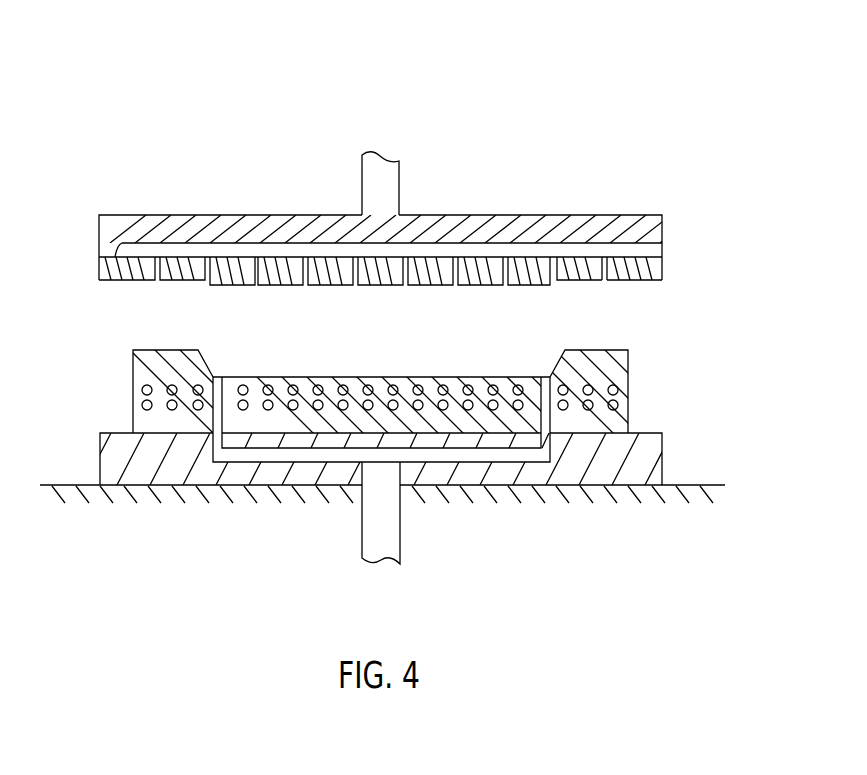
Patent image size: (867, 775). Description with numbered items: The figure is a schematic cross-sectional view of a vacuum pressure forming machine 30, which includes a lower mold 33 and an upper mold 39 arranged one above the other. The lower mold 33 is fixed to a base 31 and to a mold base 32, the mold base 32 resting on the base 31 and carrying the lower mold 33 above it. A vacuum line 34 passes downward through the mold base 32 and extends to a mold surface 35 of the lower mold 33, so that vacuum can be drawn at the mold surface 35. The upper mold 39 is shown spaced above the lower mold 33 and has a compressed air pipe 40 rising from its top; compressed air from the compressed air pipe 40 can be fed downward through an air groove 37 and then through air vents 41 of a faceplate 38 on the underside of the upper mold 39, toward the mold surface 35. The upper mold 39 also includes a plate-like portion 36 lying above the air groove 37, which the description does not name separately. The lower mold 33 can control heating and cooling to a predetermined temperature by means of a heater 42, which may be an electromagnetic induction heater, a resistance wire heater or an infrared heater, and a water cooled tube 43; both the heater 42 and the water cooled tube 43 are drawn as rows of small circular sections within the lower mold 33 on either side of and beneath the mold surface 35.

The vacuum pressure forming machine 30 is at (290, 138).
The base 31 is at (703, 500).
The mold base 32 is at (645, 462).
The lower mold 33 is at (605, 421).
The vacuum line 34 is at (387, 548).
The mold surface 35 is at (377, 378).
The upper plate 36 is at (640, 230).
The air groove 37 is at (635, 250).
The faceplate 38 is at (652, 272).
The upper mold 39 is at (728, 205).
The compressed air pipe 40 is at (387, 185).
The air vents 41 is at (603, 284).
The heater 42 is at (141, 389).
The water cooled tube 43 is at (141, 406).